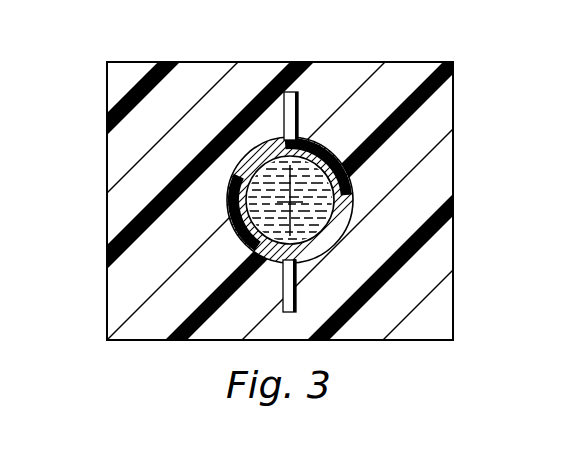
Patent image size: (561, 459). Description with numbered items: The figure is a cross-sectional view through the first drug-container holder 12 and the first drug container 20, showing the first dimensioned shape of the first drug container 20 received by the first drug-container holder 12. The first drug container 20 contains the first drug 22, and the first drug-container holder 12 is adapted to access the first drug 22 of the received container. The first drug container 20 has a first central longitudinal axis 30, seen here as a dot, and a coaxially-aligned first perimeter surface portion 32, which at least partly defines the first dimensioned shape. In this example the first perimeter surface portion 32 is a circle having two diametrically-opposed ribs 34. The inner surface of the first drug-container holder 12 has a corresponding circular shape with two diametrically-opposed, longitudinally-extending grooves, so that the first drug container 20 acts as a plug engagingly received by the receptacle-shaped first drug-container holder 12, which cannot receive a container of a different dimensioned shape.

The first drug-container holder 12 is at (97, 290).
The first drug container 20 is at (218, 207).
The first drug 22 is at (331, 216).
The first central longitudinal axis 30 is at (290, 202).
The first perimeter surface portion 32 is at (340, 197).
The ribs 34 is at (296, 108).